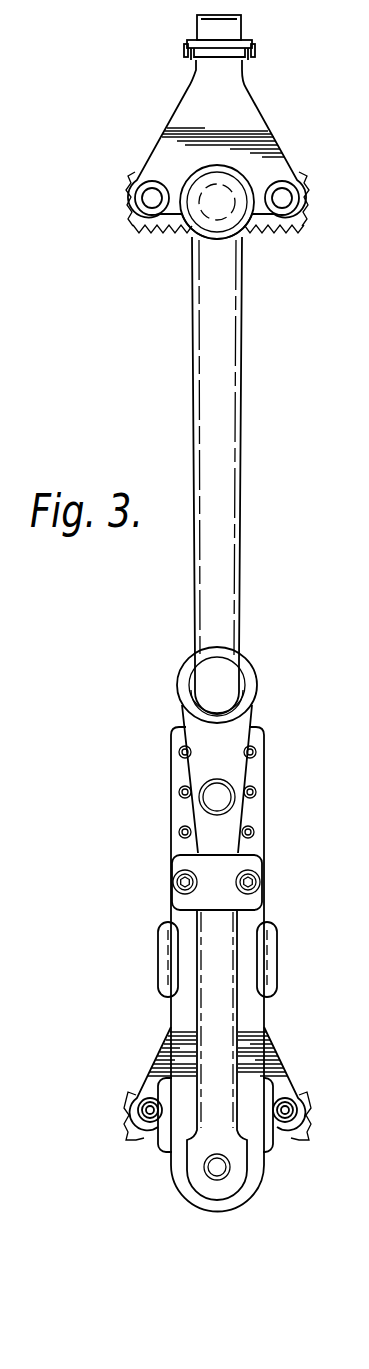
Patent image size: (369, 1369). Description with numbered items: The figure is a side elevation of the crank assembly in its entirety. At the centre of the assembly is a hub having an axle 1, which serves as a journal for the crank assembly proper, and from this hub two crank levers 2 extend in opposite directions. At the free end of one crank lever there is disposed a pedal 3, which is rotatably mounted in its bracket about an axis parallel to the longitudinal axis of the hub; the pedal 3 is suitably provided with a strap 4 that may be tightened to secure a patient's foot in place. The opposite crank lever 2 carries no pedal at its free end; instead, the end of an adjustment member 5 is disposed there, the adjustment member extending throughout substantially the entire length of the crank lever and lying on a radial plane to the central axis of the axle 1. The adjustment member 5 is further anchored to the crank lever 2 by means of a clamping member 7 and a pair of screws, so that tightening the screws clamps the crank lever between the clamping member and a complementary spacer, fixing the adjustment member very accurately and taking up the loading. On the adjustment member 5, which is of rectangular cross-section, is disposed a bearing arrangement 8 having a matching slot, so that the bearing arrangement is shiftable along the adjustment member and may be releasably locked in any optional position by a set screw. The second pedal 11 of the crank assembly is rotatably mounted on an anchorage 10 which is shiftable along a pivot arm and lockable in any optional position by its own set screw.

The axle 1 is at (187, 664).
The crank lever 2 is at (220, 433).
The pedal 3 is at (188, 232).
The strap 4 is at (268, 132).
The adjustment member 5 is at (177, 773).
The clamping member 7 is at (255, 868).
The bearing arrangement 8 is at (160, 933).
The anchorage 10 is at (167, 1140).
The pedal 11 is at (132, 1082).